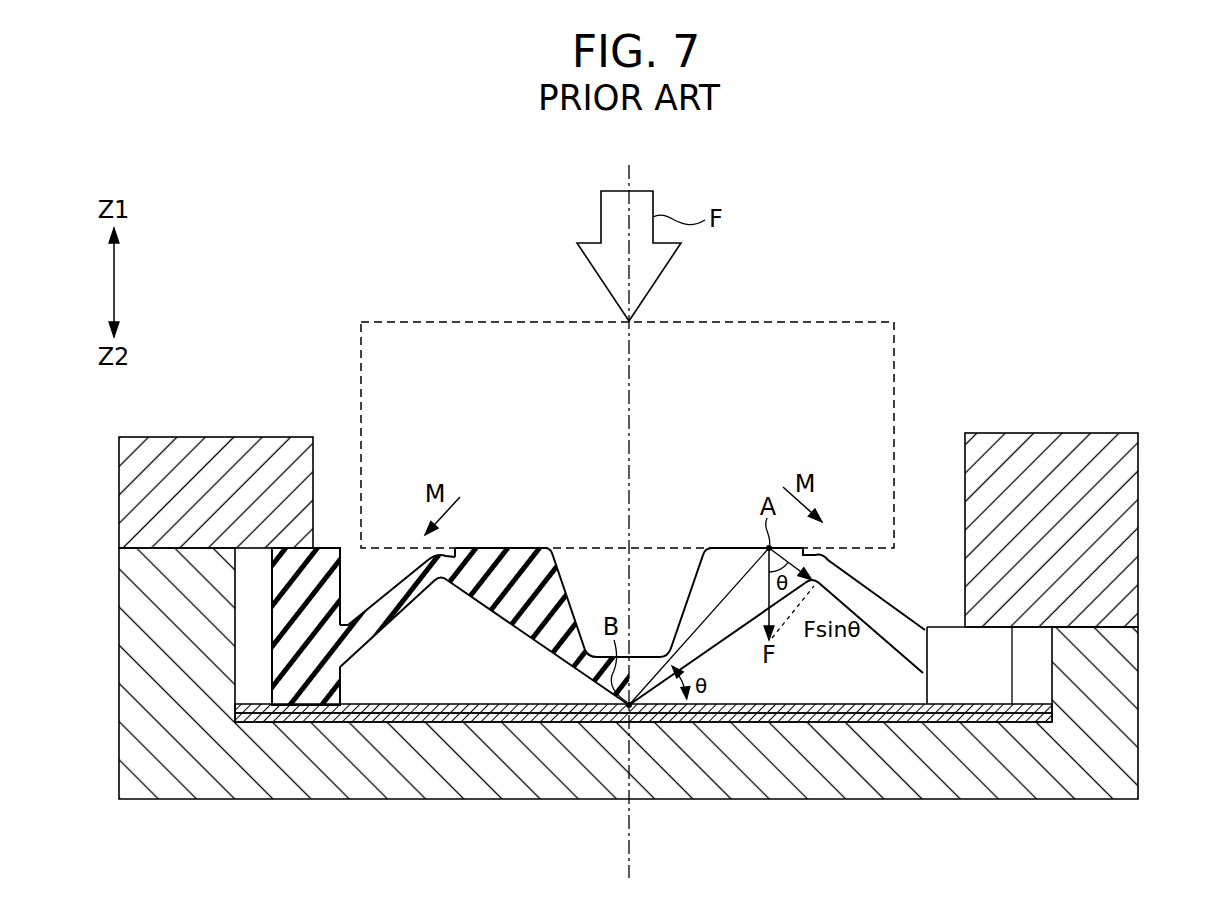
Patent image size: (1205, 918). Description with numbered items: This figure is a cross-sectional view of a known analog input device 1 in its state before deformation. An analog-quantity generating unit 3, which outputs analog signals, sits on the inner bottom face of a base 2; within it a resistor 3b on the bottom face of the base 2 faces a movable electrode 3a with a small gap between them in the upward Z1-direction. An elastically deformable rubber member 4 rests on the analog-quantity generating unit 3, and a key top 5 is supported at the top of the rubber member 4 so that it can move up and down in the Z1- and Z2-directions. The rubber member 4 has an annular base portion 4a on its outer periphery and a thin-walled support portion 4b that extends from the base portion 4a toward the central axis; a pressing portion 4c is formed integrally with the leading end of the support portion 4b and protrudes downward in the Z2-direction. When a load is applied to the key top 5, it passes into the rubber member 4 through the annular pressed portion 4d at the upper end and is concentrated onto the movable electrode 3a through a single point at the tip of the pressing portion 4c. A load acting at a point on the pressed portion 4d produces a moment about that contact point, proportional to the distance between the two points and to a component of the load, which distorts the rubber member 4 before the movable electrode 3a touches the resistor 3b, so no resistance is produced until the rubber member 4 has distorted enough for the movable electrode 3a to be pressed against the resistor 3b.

The analog input device 1 is at (952, 330).
The base 2 is at (1040, 790).
The analog-quantity generating unit 3 is at (643, 802).
The movable electrode 3a is at (818, 705).
The resistor 3b is at (870, 704).
The rubber member 4 is at (657, 483).
The annular base portion 4a is at (273, 667).
The thin-walled support portion 4b is at (380, 613).
The pressing portion 4c is at (527, 640).
The annular pressed portion 4d is at (488, 548).
The key top 5 is at (360, 345).